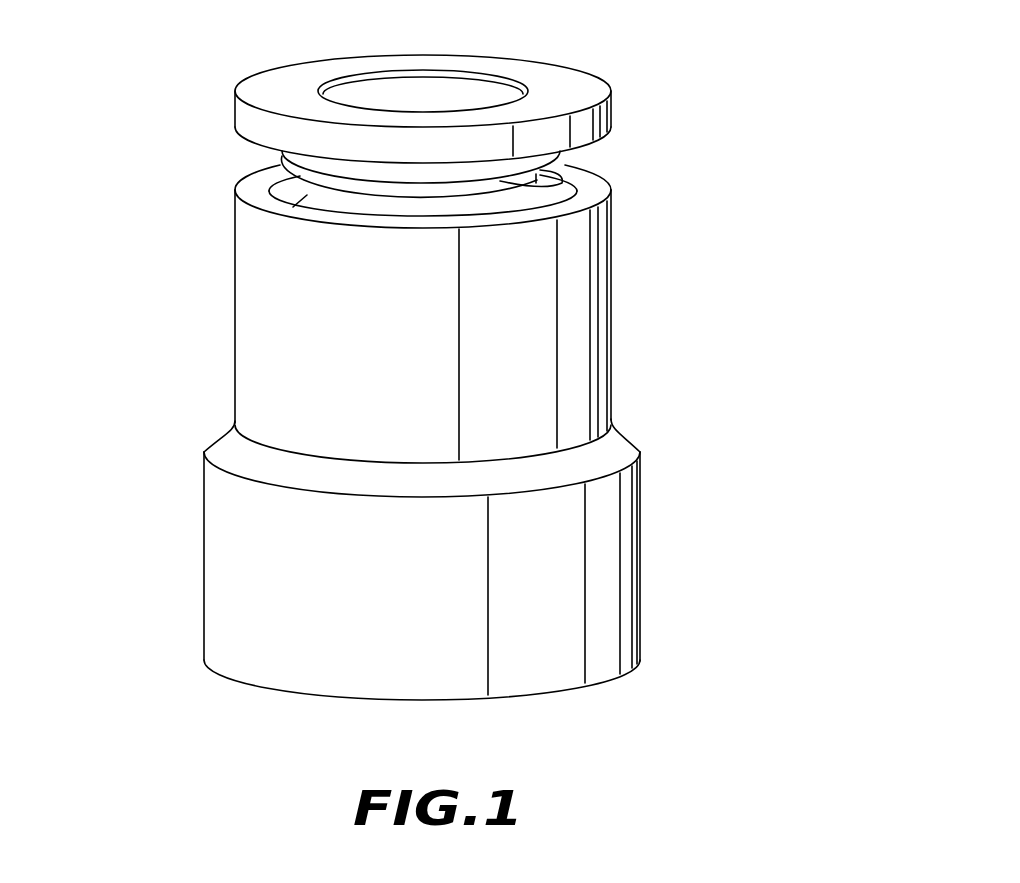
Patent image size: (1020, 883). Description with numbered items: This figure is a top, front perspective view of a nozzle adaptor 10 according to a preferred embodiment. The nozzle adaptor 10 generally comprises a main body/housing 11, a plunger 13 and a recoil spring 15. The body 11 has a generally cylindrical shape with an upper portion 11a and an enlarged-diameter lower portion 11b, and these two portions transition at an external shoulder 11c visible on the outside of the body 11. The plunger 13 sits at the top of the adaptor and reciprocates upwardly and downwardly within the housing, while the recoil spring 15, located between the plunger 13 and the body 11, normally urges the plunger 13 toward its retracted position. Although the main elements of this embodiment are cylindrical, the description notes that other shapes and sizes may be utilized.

The nozzle adaptor 10 is at (420, 363).
The main body/housing 11 is at (418, 432).
The upper portion 11a is at (243, 255).
The lower portion 11b is at (213, 590).
The external shoulder 11c is at (620, 438).
The plunger 13 is at (571, 90).
The recoil spring 15 is at (283, 153).